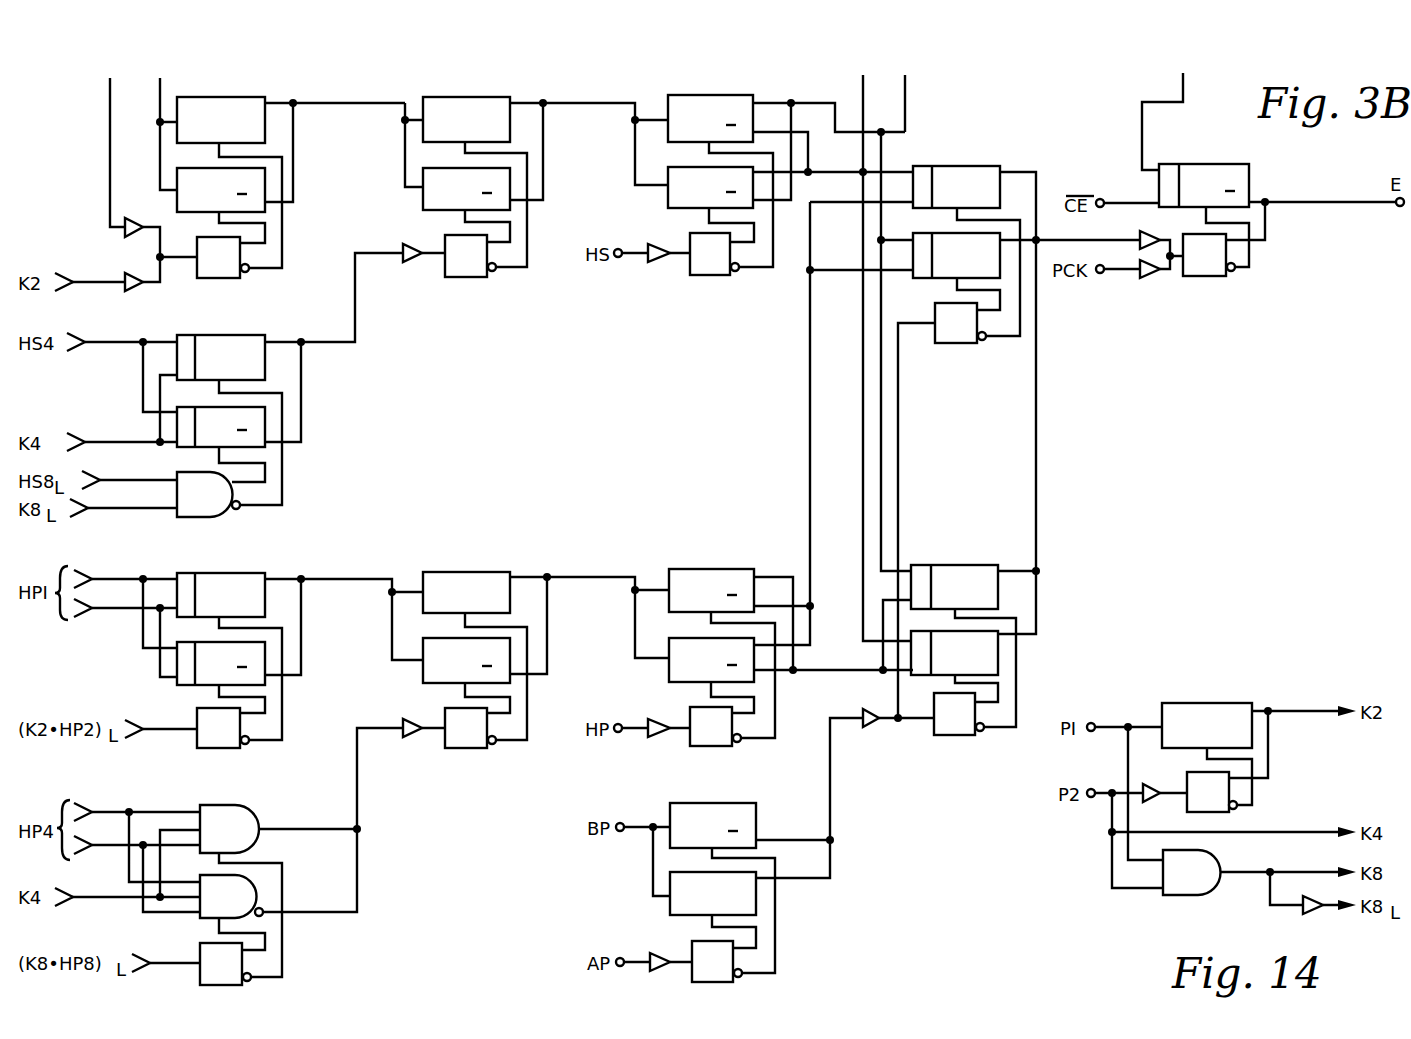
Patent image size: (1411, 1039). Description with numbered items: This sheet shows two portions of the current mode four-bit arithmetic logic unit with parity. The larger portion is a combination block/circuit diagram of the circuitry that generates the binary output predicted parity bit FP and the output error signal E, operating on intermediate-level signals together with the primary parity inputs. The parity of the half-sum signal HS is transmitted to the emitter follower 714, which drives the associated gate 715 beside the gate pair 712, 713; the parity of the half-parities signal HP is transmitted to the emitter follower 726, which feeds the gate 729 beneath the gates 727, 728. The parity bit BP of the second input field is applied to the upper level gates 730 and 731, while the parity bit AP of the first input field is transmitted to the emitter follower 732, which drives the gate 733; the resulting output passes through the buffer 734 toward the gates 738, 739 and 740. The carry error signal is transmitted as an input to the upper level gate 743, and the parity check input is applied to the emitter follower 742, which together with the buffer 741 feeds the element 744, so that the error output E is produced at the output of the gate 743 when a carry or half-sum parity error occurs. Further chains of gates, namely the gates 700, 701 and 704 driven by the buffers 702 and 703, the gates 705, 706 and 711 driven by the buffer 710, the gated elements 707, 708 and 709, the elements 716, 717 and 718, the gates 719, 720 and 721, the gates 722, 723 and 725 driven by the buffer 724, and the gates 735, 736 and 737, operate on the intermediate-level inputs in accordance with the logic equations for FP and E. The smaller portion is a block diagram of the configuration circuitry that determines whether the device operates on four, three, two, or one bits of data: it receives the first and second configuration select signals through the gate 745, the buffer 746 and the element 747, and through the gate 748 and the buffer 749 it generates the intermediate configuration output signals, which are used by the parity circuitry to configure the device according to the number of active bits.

In FIG. 3B, the upper level gate 700 is at (219, 110).
In FIG. 3B, the flip-flop 701 is at (218, 178).
In FIG. 3B, the buffer 702 is at (131, 209).
In FIG. 3B, the buffer 703 is at (120, 266).
In FIG. 3B, the inverter 704 is at (209, 246).
In FIG. 3B, the flip-flop 705 is at (462, 108).
In FIG. 3B, the flip-flop 706 is at (462, 177).
In FIG. 3B, the AND flip-flop 707 is at (216, 342).
In FIG. 3B, the AND flip-flop 708 is at (217, 415).
In FIG. 3B, the NAND gate 709 is at (204, 482).
In FIG. 3B, the buffer 710 is at (389, 239).
In FIG. 3B, the inverter 711 is at (468, 245).
In FIG. 3B, the flip-flop 712 is at (707, 107).
In FIG. 3B, the flip-flop 713 is at (707, 176).
In FIG. 3B, the emitter follower 714 is at (668, 274).
In FIG. 3B, the inverter 715 is at (700, 243).
In FIG. 3B, the AND flip-flop 716 is at (214, 578).
In FIG. 3B, the AND flip-flop 717 is at (215, 649).
In FIG. 3B, the inverter 718 is at (203, 719).
In FIG. 3B, the AND gate 719 is at (212, 814).
In FIG. 3B, the NAND gate 720 is at (214, 884).
In FIG. 3B, the inverter 721 is at (205, 954).
In FIG. 3B, the flip-flop 722 is at (465, 577).
In FIG. 3B, the flip-flop 723 is at (465, 651).
In FIG. 3B, the buffer 724 is at (426, 750).
In FIG. 3B, the inverter 725 is at (457, 718).
In FIG. 3B, the emitter follower 726 is at (671, 746).
In FIG. 3B, the flip-flop 727 is at (708, 575).
In FIG. 3B, the flip-flop 728 is at (707, 649).
In FIG. 3B, the inverter 729 is at (700, 715).
In FIG. 3B, the upper level gate 730 is at (709, 814).
In FIG. 3B, the upper level gate 731 is at (709, 881).
In FIG. 3B, the emitter follower 732 is at (661, 978).
In FIG. 3B, the inverter 733 is at (701, 951).
In FIG. 3B, the buffer 734 is at (884, 740).
In FIG. 3B, the AND flip-flop 735 is at (956, 175).
In FIG. 3B, the AND flip-flop 736 is at (955, 244).
In FIG. 3B, the inverter 737 is at (937, 312).
In FIG. 3B, the AND flip-flop 738 is at (954, 573).
In FIG. 3B, the AND flip-flop 739 is at (953, 643).
In FIG. 3B, the inverter 740 is at (944, 707).
In FIG. 3B, the buffer 741 is at (1130, 231).
In FIG. 3B, the emitter follower 742 is at (1141, 288).
In FIG. 3B, the upper level gate 743 is at (1204, 174).
In FIG. 3B, the delay element 744 is at (1196, 244).
In FIG. 14, the flip-flop 745 is at (1202, 712).
In FIG. 14, the buffer 746 is at (1153, 807).
In FIG. 14, the delay element 747 is at (1191, 782).
In FIG. 14, the AND gate 748 is at (1208, 865).
In FIG. 14, the buffer 749 is at (1311, 892).